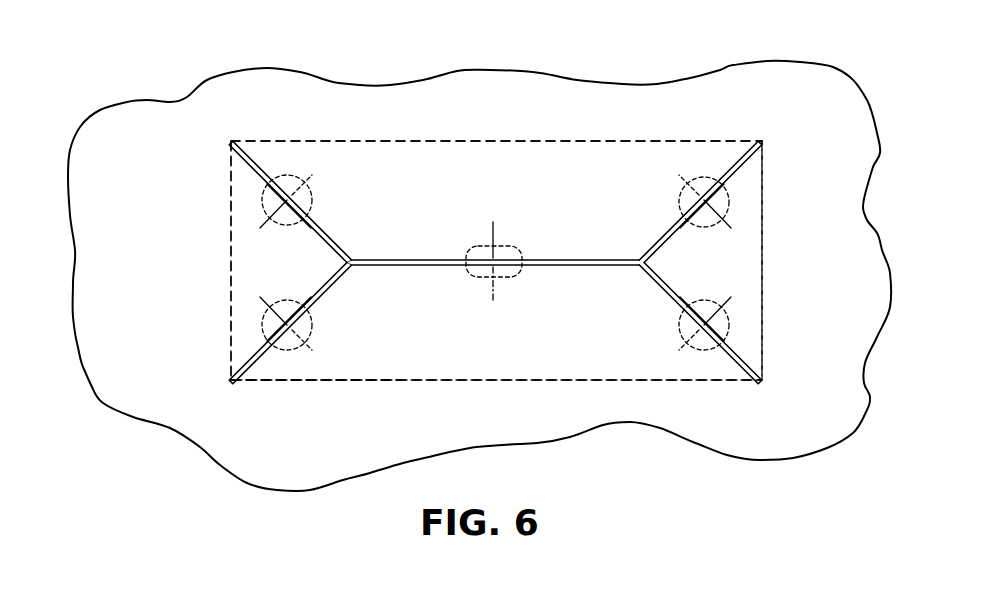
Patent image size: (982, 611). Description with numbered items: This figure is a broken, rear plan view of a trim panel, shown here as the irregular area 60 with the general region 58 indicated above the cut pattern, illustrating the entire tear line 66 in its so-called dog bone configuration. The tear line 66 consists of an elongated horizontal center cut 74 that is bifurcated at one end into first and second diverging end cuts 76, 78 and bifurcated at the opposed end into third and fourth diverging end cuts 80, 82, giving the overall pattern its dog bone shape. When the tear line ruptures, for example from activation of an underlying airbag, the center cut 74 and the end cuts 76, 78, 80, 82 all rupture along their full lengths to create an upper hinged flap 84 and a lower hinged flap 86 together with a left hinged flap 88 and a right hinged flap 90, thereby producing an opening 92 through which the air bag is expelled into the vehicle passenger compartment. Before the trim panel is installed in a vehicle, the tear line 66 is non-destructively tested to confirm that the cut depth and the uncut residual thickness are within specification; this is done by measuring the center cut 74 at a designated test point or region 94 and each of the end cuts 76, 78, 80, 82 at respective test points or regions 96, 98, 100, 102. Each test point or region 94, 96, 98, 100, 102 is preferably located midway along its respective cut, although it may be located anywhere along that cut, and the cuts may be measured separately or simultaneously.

The frame assembly 58 is at (507, 116).
The panel 60 is at (786, 82).
The tear line 66 is at (363, 275).
The center cut 74 is at (570, 257).
The first diverging end cut 76 is at (746, 164).
The second diverging end cut 78 is at (737, 350).
The third diverging end cut 80 is at (257, 170).
The fourth diverging end cut 82 is at (252, 358).
The upper hinged flap 84 is at (440, 190).
The lower hinged flap 86 is at (483, 350).
The left hinged flap 88 is at (257, 263).
The right hinged flap 90 is at (738, 268).
The opening 92 is at (313, 383).
The test point or region 94 is at (515, 277).
The test point or region 96 is at (693, 195).
The test point or region 98 is at (692, 311).
The test point or region 100 is at (310, 208).
The test point or region 102 is at (303, 310).